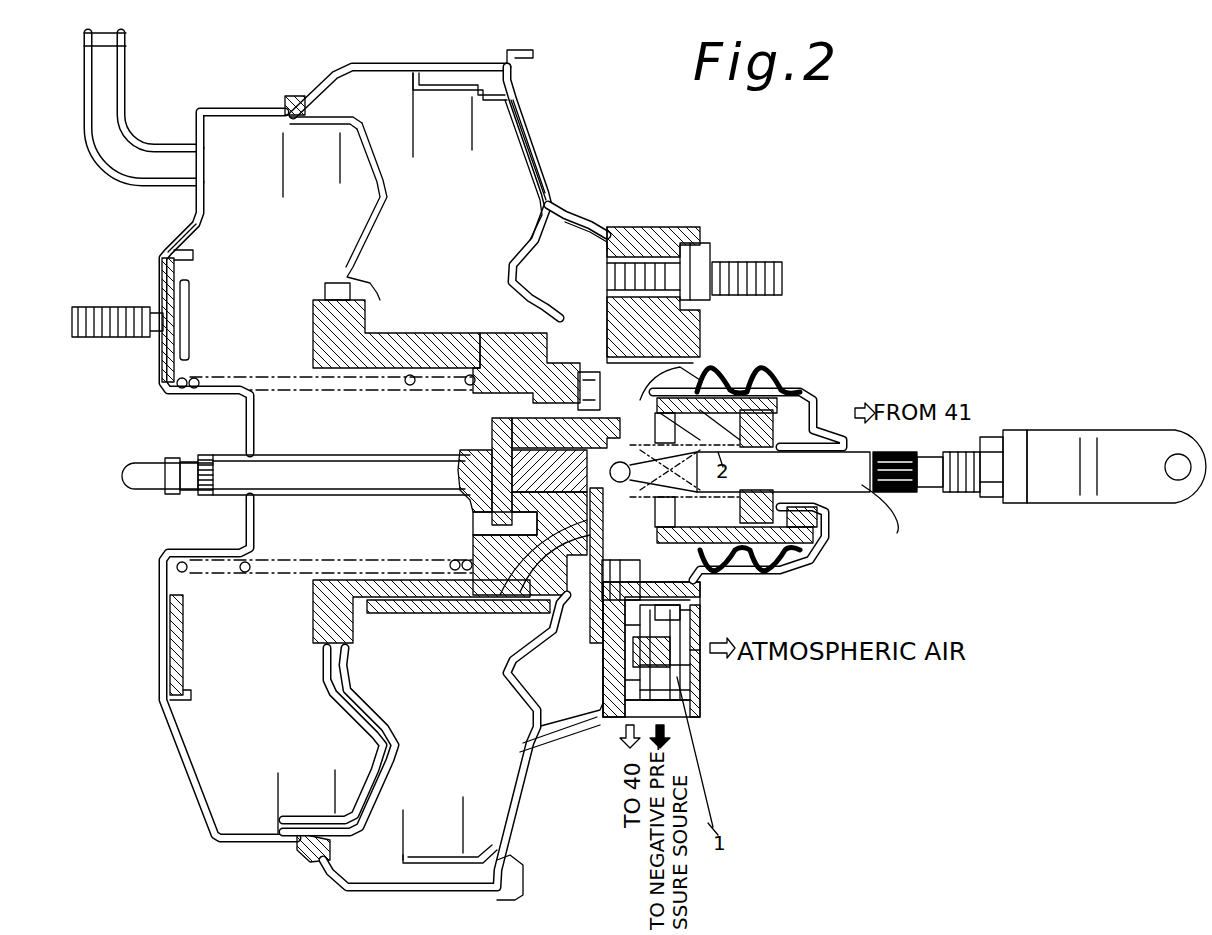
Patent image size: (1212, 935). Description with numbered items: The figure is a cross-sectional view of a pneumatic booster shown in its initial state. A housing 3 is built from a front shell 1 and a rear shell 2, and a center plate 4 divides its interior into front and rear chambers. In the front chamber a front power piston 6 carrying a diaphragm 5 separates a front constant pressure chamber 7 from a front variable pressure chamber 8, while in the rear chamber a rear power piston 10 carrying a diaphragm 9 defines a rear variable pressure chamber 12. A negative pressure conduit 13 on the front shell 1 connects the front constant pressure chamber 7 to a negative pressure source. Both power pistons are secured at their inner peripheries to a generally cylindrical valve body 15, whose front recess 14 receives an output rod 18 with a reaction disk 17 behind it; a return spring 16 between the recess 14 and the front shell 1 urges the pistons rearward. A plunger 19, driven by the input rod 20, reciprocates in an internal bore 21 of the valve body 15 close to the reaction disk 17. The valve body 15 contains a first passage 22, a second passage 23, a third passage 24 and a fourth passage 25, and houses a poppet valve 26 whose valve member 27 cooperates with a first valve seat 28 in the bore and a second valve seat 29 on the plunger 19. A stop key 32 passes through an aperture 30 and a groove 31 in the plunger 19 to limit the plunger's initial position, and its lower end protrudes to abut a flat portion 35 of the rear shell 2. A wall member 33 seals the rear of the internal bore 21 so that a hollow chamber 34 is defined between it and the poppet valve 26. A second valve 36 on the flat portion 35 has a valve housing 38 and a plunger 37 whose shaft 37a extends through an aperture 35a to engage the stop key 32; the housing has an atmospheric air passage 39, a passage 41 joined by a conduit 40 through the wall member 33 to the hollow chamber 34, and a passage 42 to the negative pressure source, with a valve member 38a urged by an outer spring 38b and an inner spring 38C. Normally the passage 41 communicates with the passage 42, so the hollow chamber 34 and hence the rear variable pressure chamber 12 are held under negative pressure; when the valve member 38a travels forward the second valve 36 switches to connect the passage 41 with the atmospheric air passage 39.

The front shell 1 is at (212, 110).
The rear shell 2 is at (513, 105).
The housing 3 is at (548, 140).
The center plate 4 is at (376, 125).
The diaphragm 5 is at (318, 136).
The front power piston 6 is at (340, 237).
The front constant pressure chamber 7 is at (182, 220).
The front variable pressure chamber 8 is at (323, 289).
The diaphragm 9 is at (464, 62).
The rear power piston 10 is at (512, 170).
The rear variable pressure chamber 12 is at (563, 233).
The negative pressure conduit 13 is at (84, 130).
The recess 14 is at (475, 396).
The valve body 15 is at (330, 357).
The return spring 16 is at (250, 572).
The reaction disk 17 is at (480, 497).
The output rod 18 is at (147, 475).
The plunger 19 is at (470, 452).
The input rod 20 is at (852, 487).
The internal bore 21 is at (607, 270).
The first passage 22 is at (440, 598).
The second passage 23 is at (487, 362).
The third passage 24 is at (588, 612).
The fourth passage 25 is at (590, 408).
The poppet valve 26 is at (670, 430).
The valve member 27 is at (687, 380).
The first valve seat 28 is at (667, 400).
The second valve seat 29 is at (633, 420).
The aperture 30 is at (547, 605).
The groove 31 is at (497, 600).
The stop key 32 is at (600, 630).
The wall member 33 is at (790, 513).
The hollow chamber 34 is at (770, 386).
The flat portion 35 is at (530, 722).
The aperture 35a is at (603, 688).
The second valve 36 is at (708, 687).
The plunger 37 is at (700, 613).
The shaft 37a is at (523, 740).
The valve housing 38 is at (617, 720).
The valve member 38a is at (700, 587).
The outer spring 38b is at (700, 620).
The inner spring 38C is at (730, 655).
The atmospheric air passage 39 is at (700, 657).
The conduit 40 is at (834, 430).
The passage 41 is at (630, 733).
The passage 42 is at (700, 717).